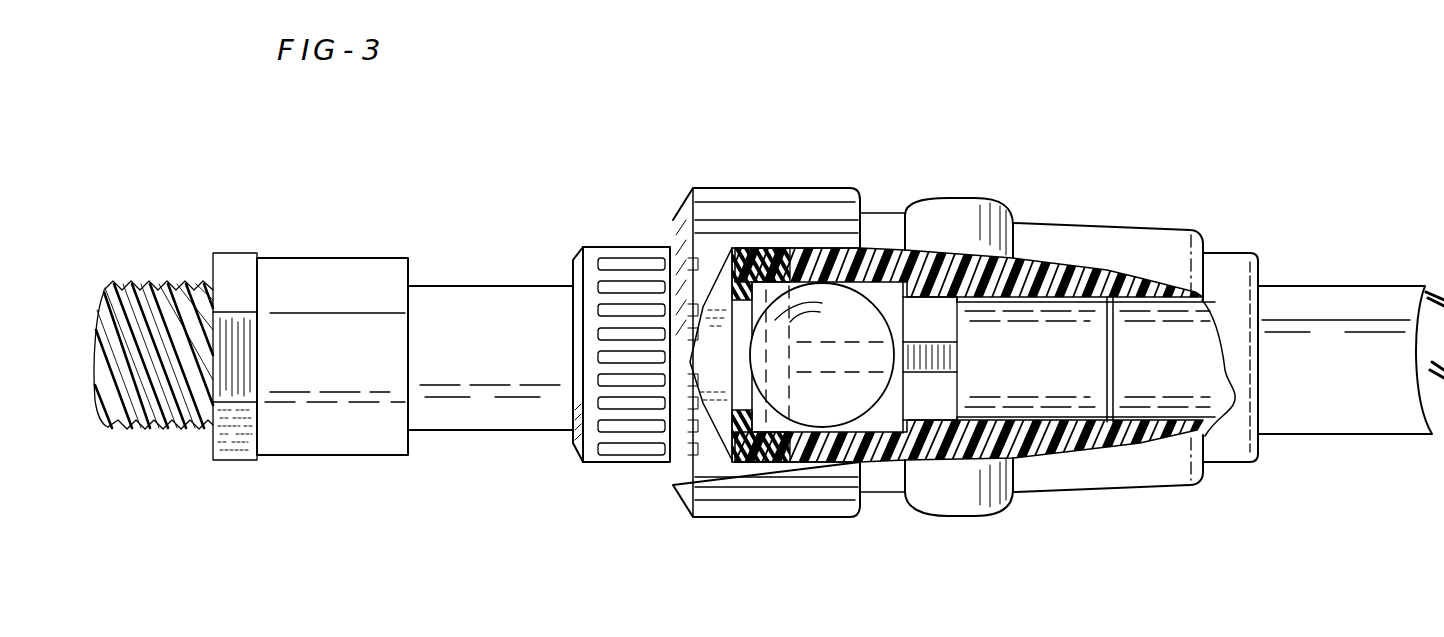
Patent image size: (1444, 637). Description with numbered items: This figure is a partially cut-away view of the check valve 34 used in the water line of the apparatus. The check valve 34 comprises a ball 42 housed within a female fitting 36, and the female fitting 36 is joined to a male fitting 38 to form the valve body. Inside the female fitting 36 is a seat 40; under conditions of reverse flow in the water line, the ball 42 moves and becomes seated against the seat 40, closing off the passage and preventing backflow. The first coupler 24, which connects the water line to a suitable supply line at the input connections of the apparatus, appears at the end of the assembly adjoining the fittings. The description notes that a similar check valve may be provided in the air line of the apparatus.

The first coupler 24 is at (342, 455).
The check valve 34 is at (786, 181).
The female fitting 36 is at (800, 518).
The male fitting 38 is at (623, 462).
The seat 40 is at (760, 407).
The ball 42 is at (870, 397).